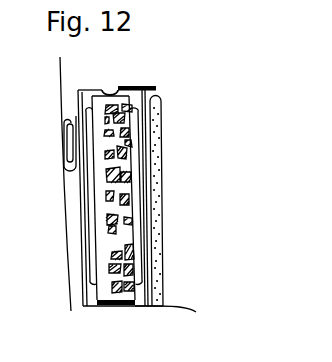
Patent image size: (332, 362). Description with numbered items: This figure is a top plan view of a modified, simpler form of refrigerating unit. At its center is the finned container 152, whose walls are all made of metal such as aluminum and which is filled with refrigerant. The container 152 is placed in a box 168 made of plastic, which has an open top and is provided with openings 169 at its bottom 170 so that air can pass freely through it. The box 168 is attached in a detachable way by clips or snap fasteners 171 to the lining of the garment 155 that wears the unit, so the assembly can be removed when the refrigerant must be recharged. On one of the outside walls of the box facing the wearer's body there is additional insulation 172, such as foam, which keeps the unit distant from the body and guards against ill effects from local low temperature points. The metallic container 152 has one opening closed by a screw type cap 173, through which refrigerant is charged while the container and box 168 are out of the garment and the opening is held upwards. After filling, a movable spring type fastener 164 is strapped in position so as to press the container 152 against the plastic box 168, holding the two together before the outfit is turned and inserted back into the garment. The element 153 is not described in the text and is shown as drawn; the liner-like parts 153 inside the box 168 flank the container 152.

The finned container 152 is at (107, 298).
The liners 153 is at (88, 250).
The lining of the garment 155 is at (60, 231).
The movable spring type fastener 164 is at (105, 80).
The box 168 is at (148, 79).
The openings 169 is at (80, 84).
The bottom 170 is at (82, 298).
The clips or snap fasteners 171 is at (55, 167).
The additional insulation 172 is at (153, 145).
The screw type cap 173 is at (131, 300).